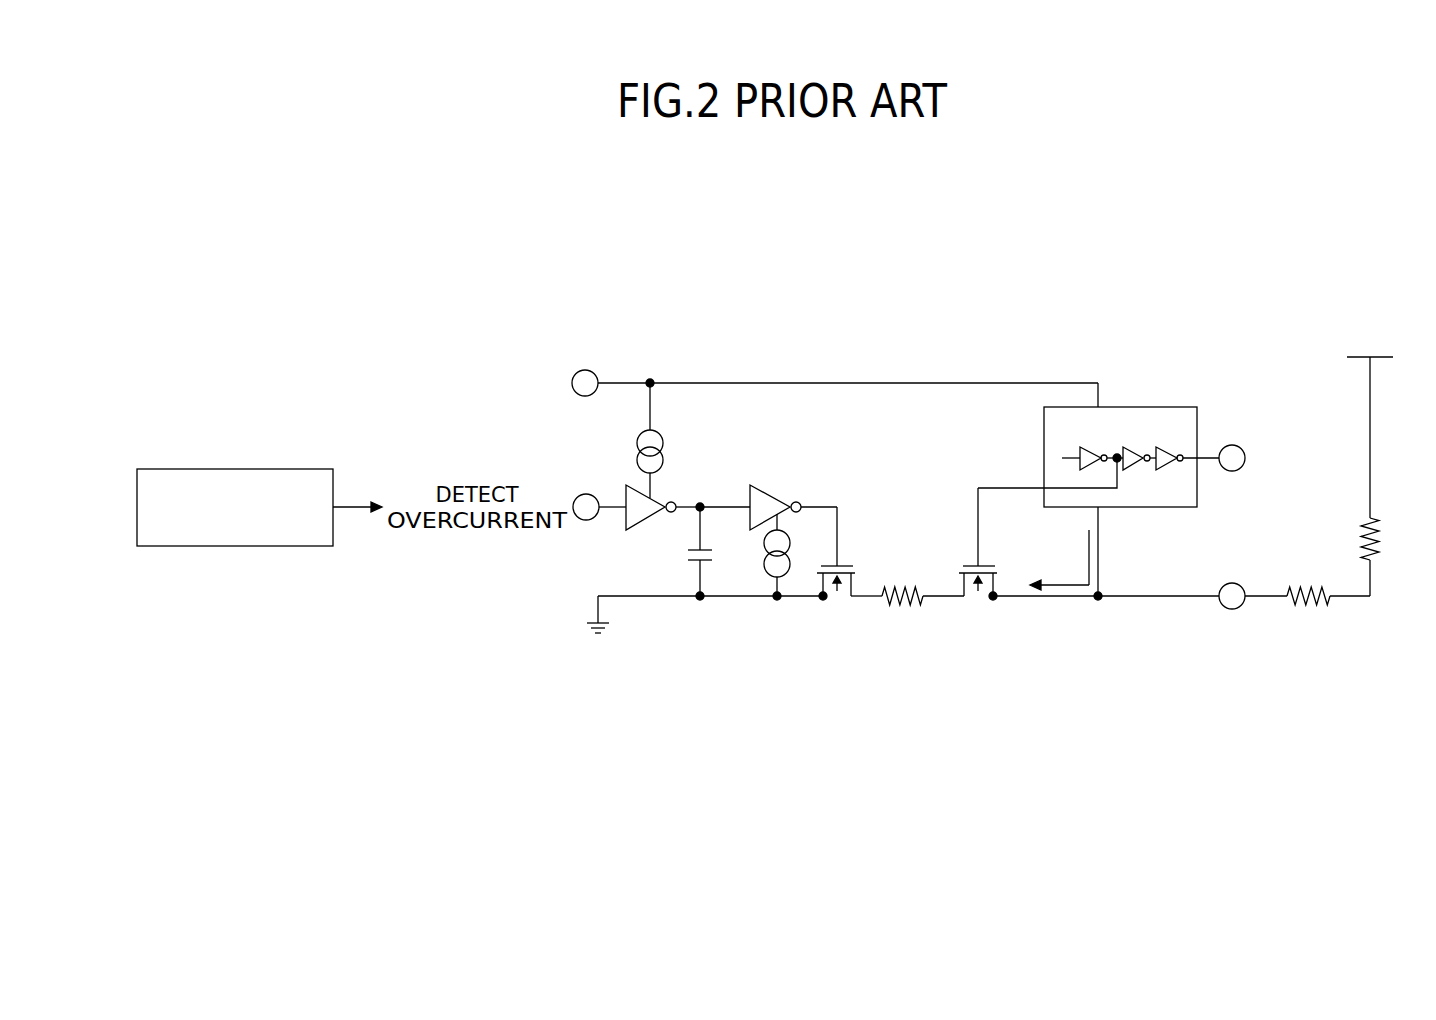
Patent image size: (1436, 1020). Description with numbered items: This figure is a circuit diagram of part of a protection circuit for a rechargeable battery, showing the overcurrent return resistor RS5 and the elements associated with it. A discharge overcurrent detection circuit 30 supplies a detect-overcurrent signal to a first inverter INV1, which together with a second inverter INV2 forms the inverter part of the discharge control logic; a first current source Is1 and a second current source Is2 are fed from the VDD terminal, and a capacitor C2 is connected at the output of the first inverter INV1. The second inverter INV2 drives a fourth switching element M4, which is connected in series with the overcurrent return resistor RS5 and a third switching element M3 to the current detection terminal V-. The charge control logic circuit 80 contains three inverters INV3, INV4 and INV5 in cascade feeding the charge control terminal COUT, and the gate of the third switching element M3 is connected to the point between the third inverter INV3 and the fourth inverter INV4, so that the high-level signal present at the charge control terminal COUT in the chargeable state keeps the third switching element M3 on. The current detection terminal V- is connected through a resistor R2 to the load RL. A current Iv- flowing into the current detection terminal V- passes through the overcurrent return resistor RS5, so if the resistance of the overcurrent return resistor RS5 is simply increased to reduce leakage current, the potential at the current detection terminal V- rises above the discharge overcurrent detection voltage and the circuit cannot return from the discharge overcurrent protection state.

The discharge overcurrent detection circuit 30 is at (297, 469).
The charge control logic circuit 80 is at (1152, 407).
The VDD terminal VDD is at (830, 375).
The first current source Is1 is at (670, 440).
The second current source Is2 is at (757, 557).
The first inverter INV1 is at (620, 522).
The second inverter INV2 is at (757, 483).
The third inverter INV3 is at (1085, 452).
The fourth inverter INV4 is at (1130, 447).
The fifth inverter INV5 is at (1167, 447).
The capacitor C2 is at (683, 551).
The fourth switching element M4 is at (836, 568).
The third switching element M3 is at (978, 558).
The overcurrent return resistor RS5 is at (907, 582).
The current flowing into the current detection terminal Iv- is at (1059, 560).
The charge control terminal COUT is at (1240, 442).
The current detection terminal V- is at (1232, 580).
The resistor R2 is at (1307, 613).
The load RL is at (1387, 557).